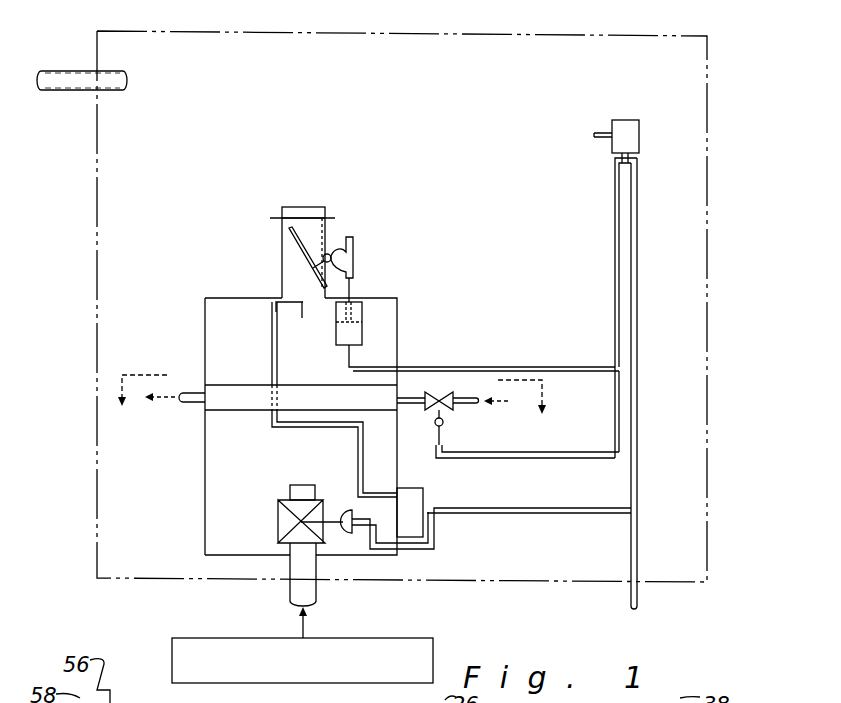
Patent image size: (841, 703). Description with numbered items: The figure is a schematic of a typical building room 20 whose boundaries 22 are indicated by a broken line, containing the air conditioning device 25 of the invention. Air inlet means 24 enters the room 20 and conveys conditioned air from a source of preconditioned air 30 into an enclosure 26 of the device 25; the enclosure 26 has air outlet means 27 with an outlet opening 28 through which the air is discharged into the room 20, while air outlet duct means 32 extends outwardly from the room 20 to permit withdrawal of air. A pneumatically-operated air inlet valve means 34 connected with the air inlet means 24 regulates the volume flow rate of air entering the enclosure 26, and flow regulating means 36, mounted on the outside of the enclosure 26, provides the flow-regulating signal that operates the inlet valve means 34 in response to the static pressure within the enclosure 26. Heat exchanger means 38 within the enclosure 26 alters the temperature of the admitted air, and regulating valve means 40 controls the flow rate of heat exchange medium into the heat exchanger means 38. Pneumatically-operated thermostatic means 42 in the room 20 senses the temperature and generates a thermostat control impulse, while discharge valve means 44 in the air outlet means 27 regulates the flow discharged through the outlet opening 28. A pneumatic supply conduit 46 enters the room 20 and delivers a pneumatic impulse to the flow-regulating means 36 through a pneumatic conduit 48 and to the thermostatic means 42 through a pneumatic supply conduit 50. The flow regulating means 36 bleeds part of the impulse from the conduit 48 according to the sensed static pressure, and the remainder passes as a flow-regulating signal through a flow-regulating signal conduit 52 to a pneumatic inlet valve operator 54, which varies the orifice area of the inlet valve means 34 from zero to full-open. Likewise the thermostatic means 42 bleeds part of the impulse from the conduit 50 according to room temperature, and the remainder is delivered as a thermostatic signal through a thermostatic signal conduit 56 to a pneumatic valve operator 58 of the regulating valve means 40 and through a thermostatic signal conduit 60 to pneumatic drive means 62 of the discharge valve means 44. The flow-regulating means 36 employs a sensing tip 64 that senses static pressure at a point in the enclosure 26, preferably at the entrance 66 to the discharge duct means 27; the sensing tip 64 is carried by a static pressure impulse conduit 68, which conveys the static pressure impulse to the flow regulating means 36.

The building room 20 is at (430, 146).
The boundaries 22 is at (336, 34).
The air inlet means 24 is at (315, 598).
The air conditioning device 25 is at (399, 298).
The enclosure 26 is at (205, 329).
The air outlet means 27 is at (282, 244).
The outlet opening 28 is at (302, 207).
The source of preconditioned air 30 is at (228, 637).
The air outlet duct means 32 is at (50, 92).
The air inlet valve means 34 is at (289, 508).
The flow regulating means 36 is at (424, 495).
The heat exchanger means 38 is at (250, 379).
The regulating valve means 40 is at (445, 408).
The thermostatic means 42 is at (625, 120).
The discharge valve means 44 is at (340, 228).
The pneumatic supply conduit 46 is at (638, 596).
The pneumatic conduit 48 is at (505, 514).
The pneumatic supply conduit 50 is at (639, 392).
The flow-regulating signal conduit 52 is at (424, 549).
The pneumatic inlet valve operator 54 is at (347, 509).
The thermostatic signal conduit 56 is at (614, 280).
The pneumatic valve operator 58 is at (447, 427).
The thermostatic signal conduit 60 is at (463, 367).
The pneumatic drive means 62 is at (362, 338).
The sensing tip 64 is at (300, 315).
The entrance 66 is at (313, 304).
The static pressure impulse conduit 68 is at (310, 428).